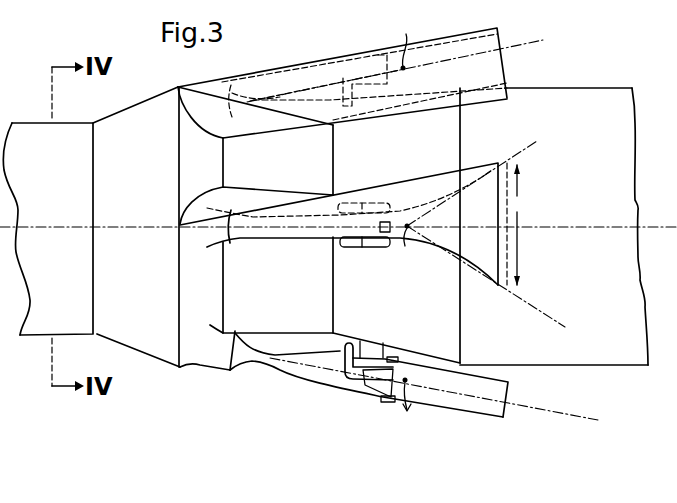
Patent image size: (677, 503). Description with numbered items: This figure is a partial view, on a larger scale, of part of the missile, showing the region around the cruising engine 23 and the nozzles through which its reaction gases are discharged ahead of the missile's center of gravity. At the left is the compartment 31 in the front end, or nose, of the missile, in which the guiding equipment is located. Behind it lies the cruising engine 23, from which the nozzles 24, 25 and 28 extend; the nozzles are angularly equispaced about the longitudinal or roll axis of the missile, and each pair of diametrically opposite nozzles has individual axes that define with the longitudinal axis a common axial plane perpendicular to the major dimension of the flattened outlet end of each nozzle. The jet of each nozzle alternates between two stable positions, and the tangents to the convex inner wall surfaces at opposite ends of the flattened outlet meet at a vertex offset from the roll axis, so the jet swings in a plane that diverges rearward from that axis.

The compartment 31 is at (28, 143).
The nozzle 24 is at (457, 36).
The cruising engine 23 is at (587, 98).
The nozzle 28 is at (497, 252).
The nozzle 25 is at (490, 398).